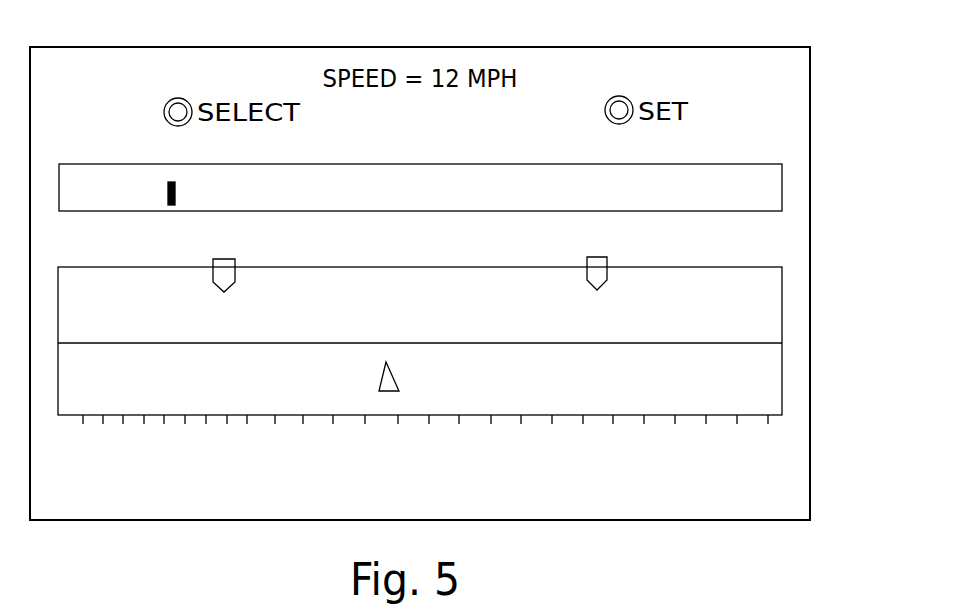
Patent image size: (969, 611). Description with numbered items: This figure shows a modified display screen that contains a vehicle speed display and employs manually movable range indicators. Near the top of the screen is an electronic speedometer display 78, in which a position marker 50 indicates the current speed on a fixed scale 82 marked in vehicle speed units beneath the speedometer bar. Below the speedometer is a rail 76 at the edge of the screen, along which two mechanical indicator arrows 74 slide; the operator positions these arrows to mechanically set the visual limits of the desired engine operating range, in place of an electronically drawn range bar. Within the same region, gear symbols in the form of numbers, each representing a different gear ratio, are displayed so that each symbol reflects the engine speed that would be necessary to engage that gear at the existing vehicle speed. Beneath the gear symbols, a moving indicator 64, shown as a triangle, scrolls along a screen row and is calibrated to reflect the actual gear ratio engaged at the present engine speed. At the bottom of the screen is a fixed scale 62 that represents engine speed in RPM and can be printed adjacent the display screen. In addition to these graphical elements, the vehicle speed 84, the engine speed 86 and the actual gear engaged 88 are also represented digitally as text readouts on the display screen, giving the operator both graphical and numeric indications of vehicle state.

The vehicle speed 84 is at (570, 64).
The fixed scale 82 is at (804, 205).
The electronic speedometer display 78 is at (400, 164).
The speed indicator marker 50 is at (176, 192).
The rail 76 is at (415, 267).
The mechanical indicator arrows 74 is at (228, 262).
The moving indicator 64 is at (400, 378).
The fixed scale 62 is at (484, 460).
The engine speed 86 is at (135, 504).
The actual gear engaged 88 is at (605, 510).